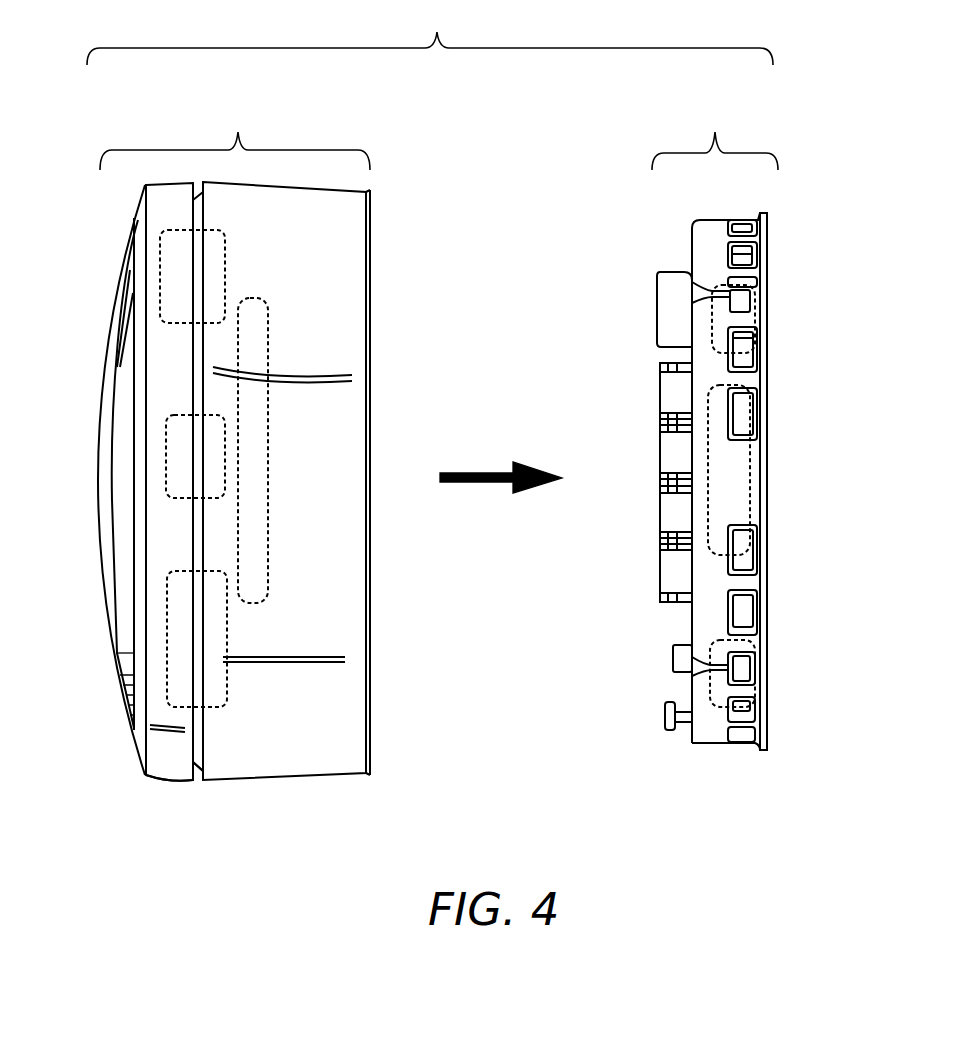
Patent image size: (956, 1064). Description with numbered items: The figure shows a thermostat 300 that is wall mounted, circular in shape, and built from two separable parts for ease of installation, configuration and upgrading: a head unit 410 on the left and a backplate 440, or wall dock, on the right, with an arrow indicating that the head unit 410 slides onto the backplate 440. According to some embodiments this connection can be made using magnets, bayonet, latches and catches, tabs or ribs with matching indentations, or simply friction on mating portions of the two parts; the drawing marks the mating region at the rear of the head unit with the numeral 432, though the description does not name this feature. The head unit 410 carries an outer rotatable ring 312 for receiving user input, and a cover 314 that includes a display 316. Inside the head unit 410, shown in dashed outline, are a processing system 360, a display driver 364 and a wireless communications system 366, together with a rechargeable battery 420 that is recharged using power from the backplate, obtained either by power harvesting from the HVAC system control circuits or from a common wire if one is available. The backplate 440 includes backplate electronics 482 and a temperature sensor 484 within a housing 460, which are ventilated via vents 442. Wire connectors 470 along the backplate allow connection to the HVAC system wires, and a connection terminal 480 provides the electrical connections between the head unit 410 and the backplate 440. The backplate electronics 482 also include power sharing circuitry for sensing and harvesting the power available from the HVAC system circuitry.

The thermostat 300 is at (430, 35).
The head unit 410 is at (235, 137).
The backplate 440 is at (715, 138).
The outer rotatable ring 312 is at (163, 768).
The cover 314 is at (118, 287).
The display 316 is at (107, 482).
The processing system 360 is at (227, 620).
The display driver 364 is at (225, 478).
The wireless communications system 366 is at (225, 275).
The rechargeable battery 420 is at (268, 413).
The seam 432 is at (196, 783).
The vents 442 is at (747, 610).
The housing 460 is at (710, 243).
The wire connectors 470 is at (670, 388).
The connection terminal 480 is at (682, 653).
The backplate electronics 482 is at (750, 477).
The temperature sensor 484 is at (752, 320).